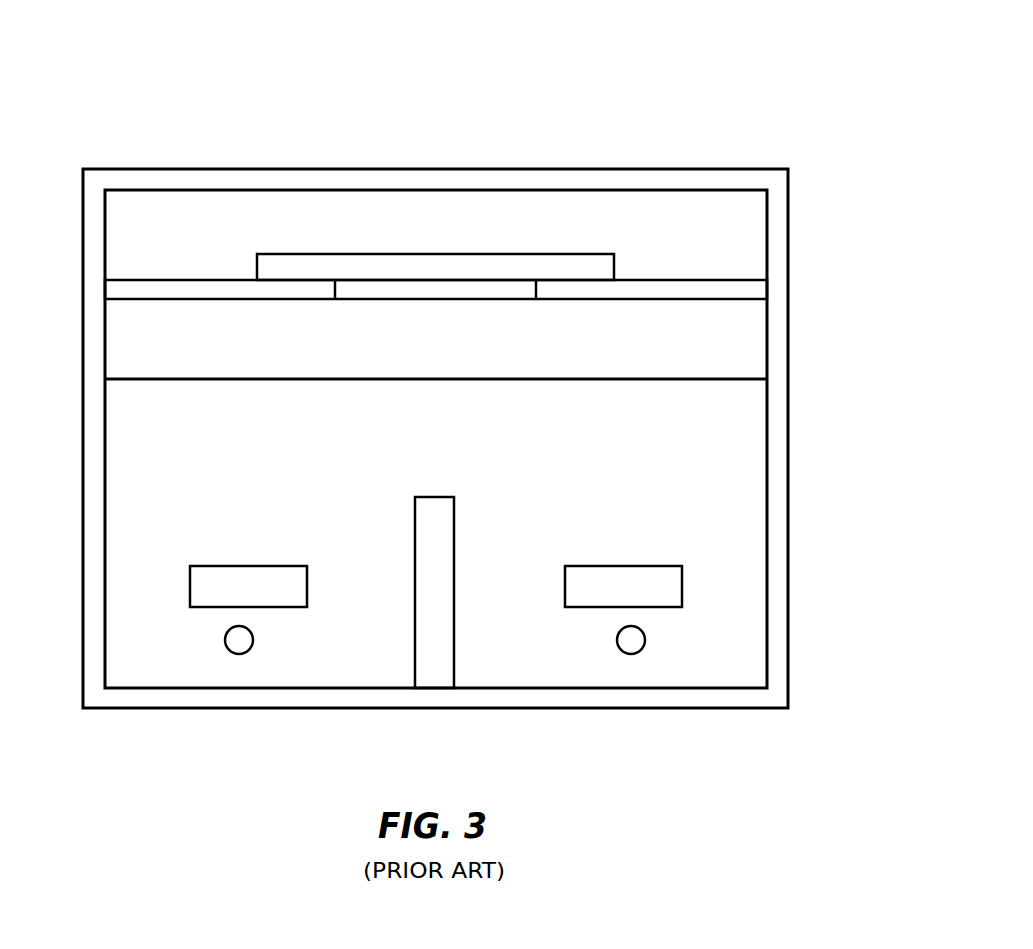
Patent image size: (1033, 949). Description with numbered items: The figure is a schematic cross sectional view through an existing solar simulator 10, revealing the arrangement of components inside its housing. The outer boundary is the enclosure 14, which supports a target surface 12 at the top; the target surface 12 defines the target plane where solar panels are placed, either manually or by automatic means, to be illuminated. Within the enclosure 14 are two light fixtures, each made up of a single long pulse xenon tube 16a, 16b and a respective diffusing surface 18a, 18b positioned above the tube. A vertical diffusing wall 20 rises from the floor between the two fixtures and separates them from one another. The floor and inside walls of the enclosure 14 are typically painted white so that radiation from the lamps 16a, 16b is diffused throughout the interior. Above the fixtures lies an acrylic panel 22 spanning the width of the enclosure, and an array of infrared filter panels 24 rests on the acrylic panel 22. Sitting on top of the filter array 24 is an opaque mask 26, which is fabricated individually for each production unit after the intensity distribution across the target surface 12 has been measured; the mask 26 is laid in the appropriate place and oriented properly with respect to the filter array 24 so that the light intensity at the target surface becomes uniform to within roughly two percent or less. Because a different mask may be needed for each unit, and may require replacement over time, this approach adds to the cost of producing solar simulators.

The solar simulator 10 is at (451, 365).
The target surface 12 is at (606, 169).
The enclosure 14 is at (788, 408).
The xenon tube 16a is at (246, 640).
The xenon tube 16b is at (638, 640).
The diffusing surface 18a is at (243, 577).
The diffusing surface 18b is at (619, 580).
The diffusing wall 20 is at (439, 515).
The acrylic panel 22 is at (171, 348).
The infrared filter panels 24 is at (362, 287).
The mask 26 is at (405, 267).